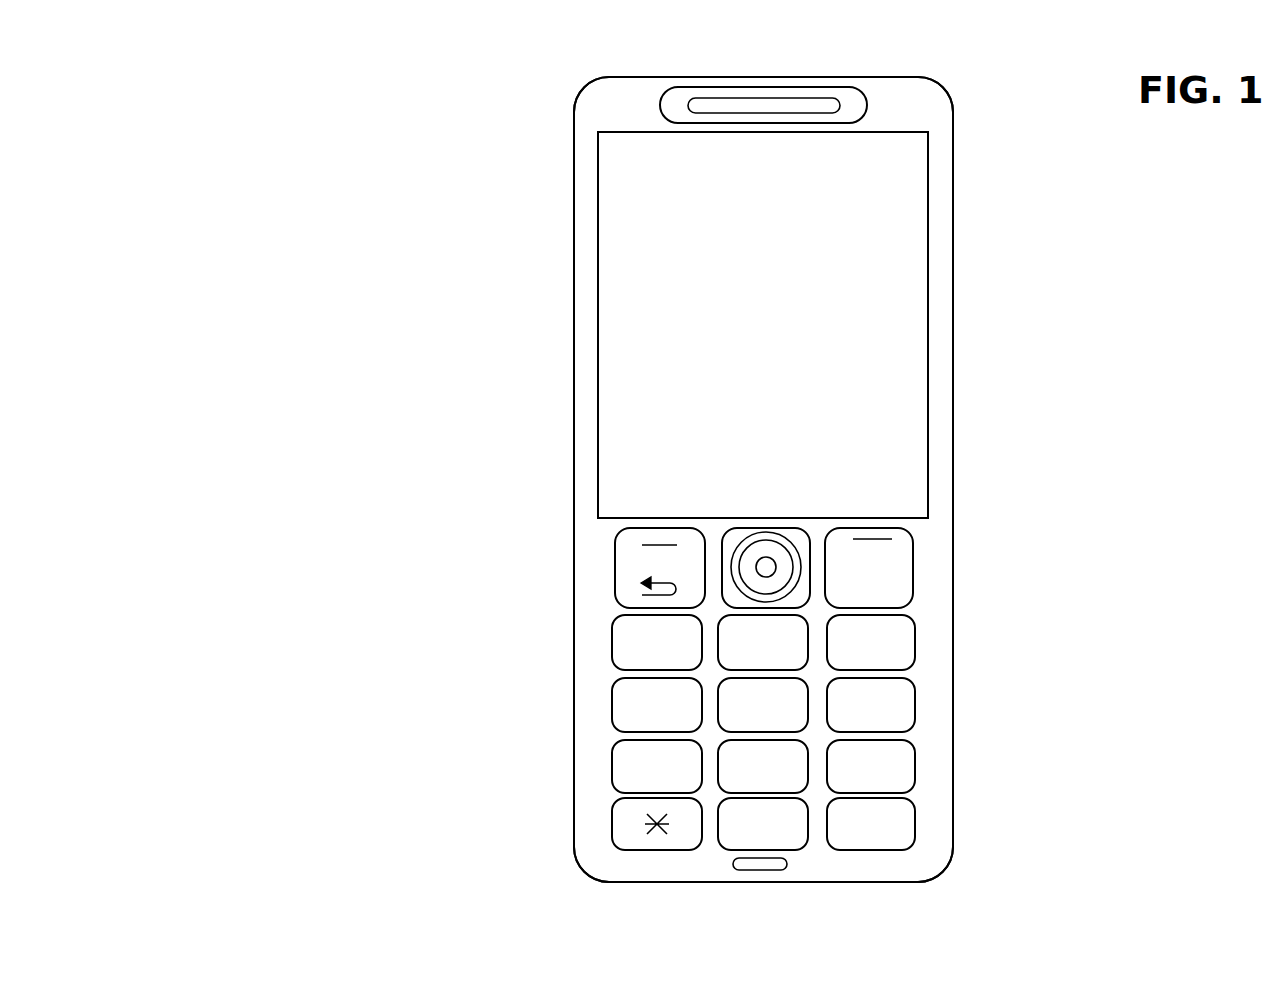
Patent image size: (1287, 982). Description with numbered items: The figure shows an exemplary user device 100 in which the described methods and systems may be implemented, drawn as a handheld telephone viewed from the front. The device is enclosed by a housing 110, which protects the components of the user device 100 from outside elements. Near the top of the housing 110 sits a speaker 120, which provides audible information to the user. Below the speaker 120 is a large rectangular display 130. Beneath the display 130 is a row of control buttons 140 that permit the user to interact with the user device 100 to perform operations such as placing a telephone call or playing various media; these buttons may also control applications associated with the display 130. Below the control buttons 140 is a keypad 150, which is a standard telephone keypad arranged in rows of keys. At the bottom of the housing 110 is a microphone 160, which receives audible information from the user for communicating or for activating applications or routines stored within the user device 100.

The user device 100 is at (305, 78).
The housing 110 is at (580, 173).
The speaker 120 is at (862, 104).
The display 130 is at (883, 402).
The control buttons 140 is at (913, 533).
The keypad 150 is at (917, 642).
The microphone 160 is at (737, 863).